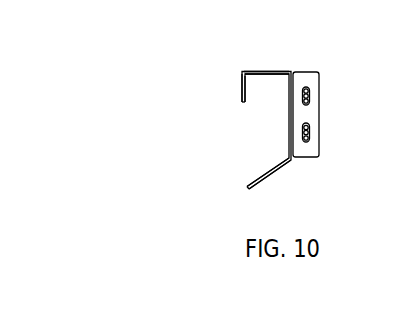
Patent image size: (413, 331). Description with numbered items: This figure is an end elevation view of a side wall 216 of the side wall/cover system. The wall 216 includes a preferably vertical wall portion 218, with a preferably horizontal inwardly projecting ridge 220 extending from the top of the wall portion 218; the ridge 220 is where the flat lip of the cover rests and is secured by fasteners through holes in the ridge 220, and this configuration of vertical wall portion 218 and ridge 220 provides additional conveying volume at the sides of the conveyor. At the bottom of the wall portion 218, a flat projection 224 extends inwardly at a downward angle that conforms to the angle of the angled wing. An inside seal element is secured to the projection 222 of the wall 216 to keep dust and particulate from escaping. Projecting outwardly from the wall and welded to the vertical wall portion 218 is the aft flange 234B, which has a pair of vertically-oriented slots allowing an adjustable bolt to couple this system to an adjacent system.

The wall 216 is at (198, 165).
The vertical wall portion 218 is at (289, 113).
The inwardly projecting ridge 220 is at (289, 41).
The flat projection 222 is at (240, 85).
The flat projection 224 is at (289, 187).
The aft flange 234B is at (340, 114).